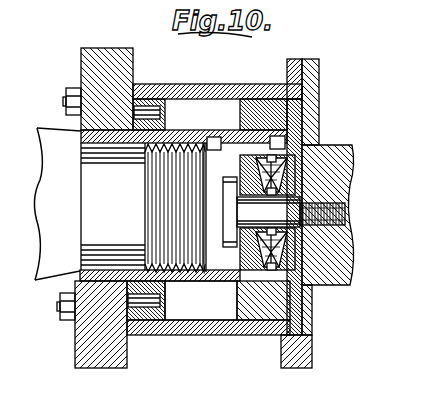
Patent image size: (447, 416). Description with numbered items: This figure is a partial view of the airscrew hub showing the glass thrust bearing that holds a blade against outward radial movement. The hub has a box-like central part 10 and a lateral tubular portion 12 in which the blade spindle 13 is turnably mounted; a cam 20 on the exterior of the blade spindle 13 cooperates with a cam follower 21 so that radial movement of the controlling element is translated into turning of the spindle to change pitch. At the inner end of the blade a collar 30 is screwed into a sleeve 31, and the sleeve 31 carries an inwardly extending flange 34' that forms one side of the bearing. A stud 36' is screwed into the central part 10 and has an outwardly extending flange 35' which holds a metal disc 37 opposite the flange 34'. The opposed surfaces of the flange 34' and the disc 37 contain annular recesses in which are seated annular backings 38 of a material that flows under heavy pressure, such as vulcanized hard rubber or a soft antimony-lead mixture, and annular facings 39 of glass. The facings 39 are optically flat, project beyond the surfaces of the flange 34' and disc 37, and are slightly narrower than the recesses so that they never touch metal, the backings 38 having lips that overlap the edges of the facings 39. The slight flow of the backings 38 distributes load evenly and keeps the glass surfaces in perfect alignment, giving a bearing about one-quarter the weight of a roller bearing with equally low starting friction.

The box-like central part 10 is at (340, 168).
The lateral tubular portion 12 is at (152, 333).
The blade spindle 13 is at (190, 127).
The cam 20 is at (213, 92).
The cam follower 21 is at (277, 136).
The collar 30 is at (113, 206).
The sleeve 31 is at (195, 283).
The inwardly extending flange 34' is at (292, 121).
The outwardly extending flange 35' is at (218, 177).
The stud 36' is at (268, 212).
The metal disc 37 is at (201, 300).
The annular backing 38 is at (223, 336).
The annular facing 39 is at (270, 270).